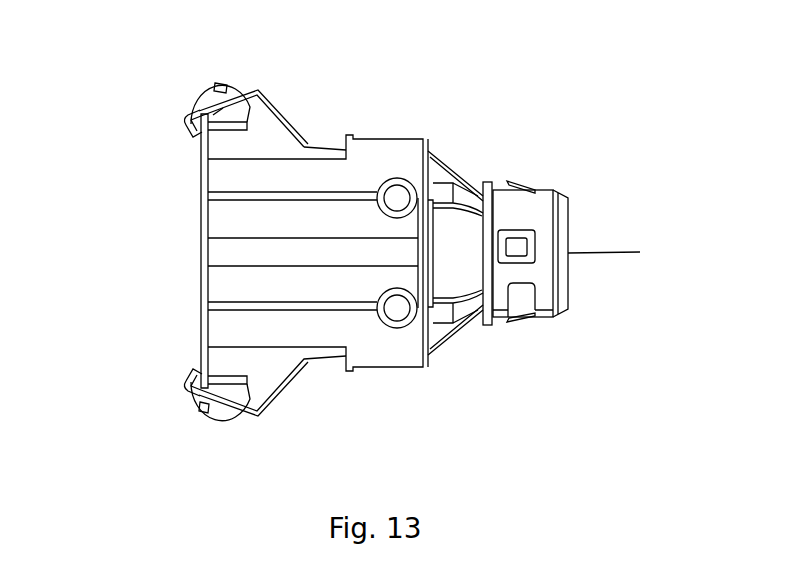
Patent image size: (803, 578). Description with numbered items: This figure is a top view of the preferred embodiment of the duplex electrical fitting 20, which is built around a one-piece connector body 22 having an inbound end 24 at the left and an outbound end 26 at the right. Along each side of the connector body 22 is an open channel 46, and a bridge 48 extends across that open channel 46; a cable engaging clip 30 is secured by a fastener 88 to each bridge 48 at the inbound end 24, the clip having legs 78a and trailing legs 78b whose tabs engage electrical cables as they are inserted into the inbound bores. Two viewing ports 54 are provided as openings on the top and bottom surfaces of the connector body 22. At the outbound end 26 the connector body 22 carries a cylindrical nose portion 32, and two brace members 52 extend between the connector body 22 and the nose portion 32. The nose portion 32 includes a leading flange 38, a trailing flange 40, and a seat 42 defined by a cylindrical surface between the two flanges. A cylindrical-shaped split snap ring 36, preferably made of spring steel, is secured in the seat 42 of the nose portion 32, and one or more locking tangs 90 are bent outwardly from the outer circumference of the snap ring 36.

The duplex electrical fitting 20 is at (133, 113).
The one-piece connector body 22 is at (320, 283).
The inbound end 24 is at (201, 252).
The outbound end 26 is at (640, 252).
The cable engaging clip 30 is at (293, 250).
The cylindrical nose portion 32 is at (455, 251).
The split snap ring 36 is at (551, 243).
The leading flange 38 is at (557, 316).
The trailing flange 40 is at (486, 182).
The seat 42 is at (554, 314).
The open channel 46 is at (313, 146).
The bridge 48 is at (192, 133).
The brace member 52 is at (443, 160).
The viewing port 54 is at (397, 308).
The leg 78a is at (284, 388).
The trailing leg 78b is at (192, 389).
The fastener 88 is at (213, 82).
The locking tang 90 is at (518, 183).